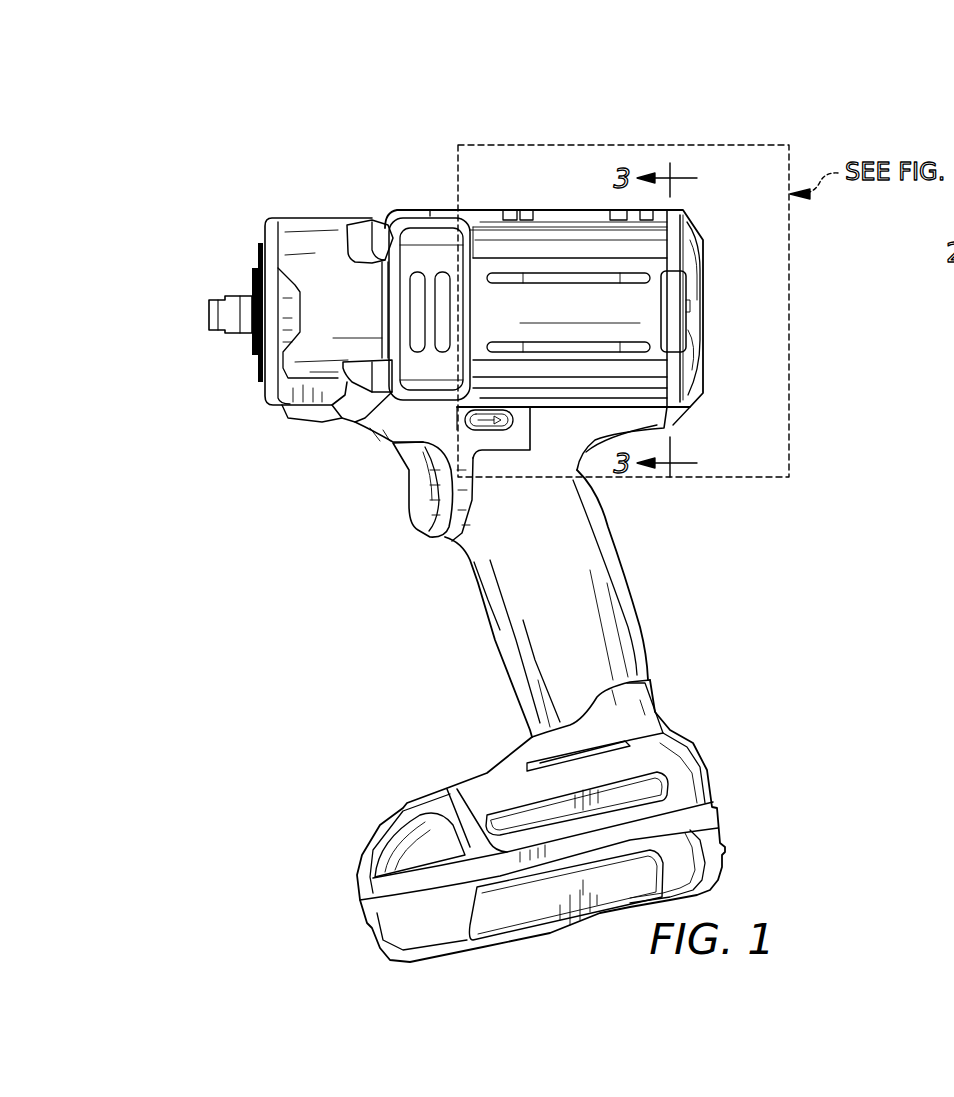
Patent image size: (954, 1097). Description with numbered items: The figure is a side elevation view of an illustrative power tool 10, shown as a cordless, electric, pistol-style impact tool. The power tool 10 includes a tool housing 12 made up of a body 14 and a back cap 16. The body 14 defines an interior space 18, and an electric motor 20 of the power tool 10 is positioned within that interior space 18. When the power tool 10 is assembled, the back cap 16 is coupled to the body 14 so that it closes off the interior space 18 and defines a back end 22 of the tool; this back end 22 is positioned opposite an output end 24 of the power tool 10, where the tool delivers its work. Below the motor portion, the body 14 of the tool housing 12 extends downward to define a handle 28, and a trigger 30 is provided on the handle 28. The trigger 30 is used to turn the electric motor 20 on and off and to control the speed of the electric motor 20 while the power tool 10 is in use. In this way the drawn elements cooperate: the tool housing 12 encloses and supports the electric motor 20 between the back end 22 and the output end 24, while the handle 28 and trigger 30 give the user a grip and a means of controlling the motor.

The power tool 10 is at (830, 108).
The tool housing 12 is at (353, 204).
The body 14 is at (487, 233).
The back cap 16 is at (697, 293).
The interior space 18 is at (553, 225).
The electric motor 20 is at (567, 262).
The back end 22 is at (707, 258).
The output end 24 is at (213, 297).
The handle 28 is at (610, 583).
The trigger 30 is at (410, 500).